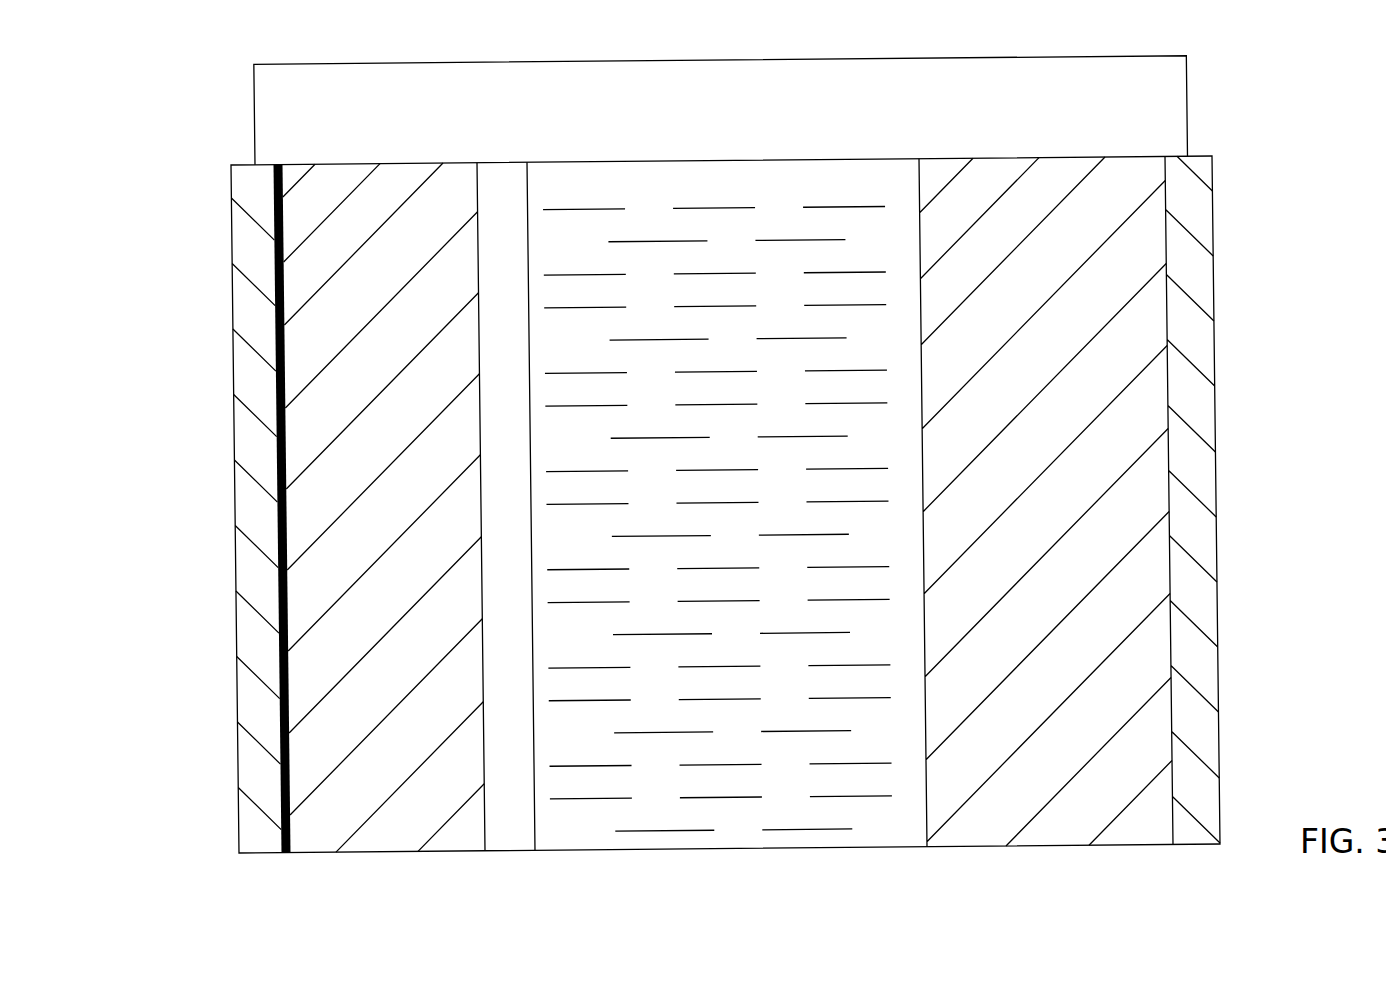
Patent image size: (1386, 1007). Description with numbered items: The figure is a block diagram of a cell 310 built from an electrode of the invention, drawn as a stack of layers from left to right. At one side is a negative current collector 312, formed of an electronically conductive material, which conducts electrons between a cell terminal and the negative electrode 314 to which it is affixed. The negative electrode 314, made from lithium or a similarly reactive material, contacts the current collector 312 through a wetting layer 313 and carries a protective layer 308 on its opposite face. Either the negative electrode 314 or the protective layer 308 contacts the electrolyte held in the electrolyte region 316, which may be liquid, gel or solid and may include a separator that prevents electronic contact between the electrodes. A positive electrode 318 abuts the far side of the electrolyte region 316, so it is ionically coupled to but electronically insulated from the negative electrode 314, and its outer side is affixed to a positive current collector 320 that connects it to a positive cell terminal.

The cell 310 is at (1268, 110).
The negative current collector 312 is at (252, 572).
The wetting layer 313 is at (284, 852).
The negative electrode 314 is at (380, 836).
The protective layer 308 is at (516, 832).
The electrolyte region 316 is at (738, 827).
The positive electrode 318 is at (1060, 828).
The positive current collector 320 is at (1212, 608).